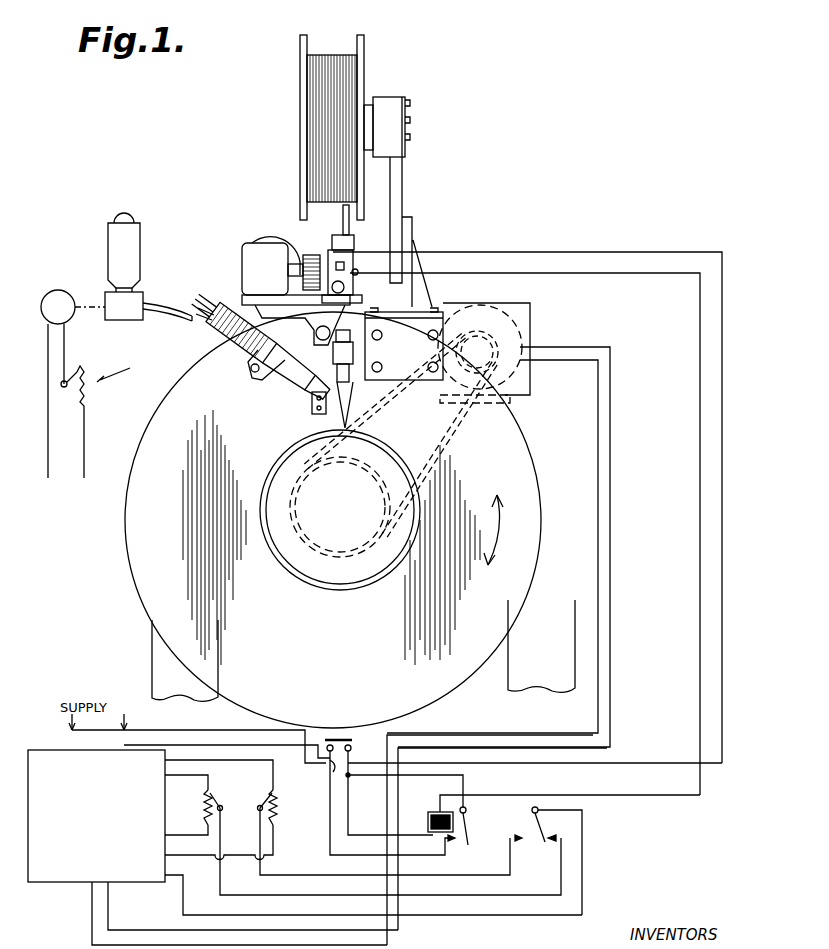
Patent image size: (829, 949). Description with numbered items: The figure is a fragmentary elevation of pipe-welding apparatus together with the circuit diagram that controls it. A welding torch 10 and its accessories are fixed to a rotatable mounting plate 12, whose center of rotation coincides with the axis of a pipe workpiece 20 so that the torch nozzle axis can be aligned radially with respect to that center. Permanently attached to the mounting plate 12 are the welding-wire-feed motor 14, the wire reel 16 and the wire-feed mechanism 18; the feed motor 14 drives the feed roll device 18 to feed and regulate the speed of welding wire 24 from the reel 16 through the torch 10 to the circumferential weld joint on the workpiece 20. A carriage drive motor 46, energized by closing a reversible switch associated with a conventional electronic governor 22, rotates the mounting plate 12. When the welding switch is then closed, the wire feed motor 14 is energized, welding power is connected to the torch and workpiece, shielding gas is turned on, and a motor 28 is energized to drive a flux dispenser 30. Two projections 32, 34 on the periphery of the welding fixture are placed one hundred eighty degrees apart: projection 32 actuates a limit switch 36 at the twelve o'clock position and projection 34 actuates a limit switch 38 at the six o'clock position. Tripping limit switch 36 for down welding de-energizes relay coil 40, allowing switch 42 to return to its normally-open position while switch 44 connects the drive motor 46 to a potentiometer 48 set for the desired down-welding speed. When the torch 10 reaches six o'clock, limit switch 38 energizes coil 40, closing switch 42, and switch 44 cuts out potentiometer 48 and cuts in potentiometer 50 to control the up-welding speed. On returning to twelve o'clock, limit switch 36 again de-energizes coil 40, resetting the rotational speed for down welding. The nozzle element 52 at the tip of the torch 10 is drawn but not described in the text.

The welding torch 10 is at (292, 378).
The rotatable mounting plate 12 is at (140, 570).
The welding-wire-feed motor 14 is at (265, 245).
The wire reel 16 is at (300, 121).
The wire-feed mechanism 18 is at (352, 270).
The pipe workpiece 20 is at (296, 580).
The electronic governor 22 is at (60, 880).
The welding wire 24 is at (343, 212).
The motor 28 is at (57, 290).
The flux dispenser 30 is at (135, 302).
The projection 32 is at (345, 290).
The projection 34 is at (341, 732).
The limit switch 36 is at (420, 298).
The limit switch 38 is at (326, 772).
The relay coil 40 is at (440, 818).
The switch 42 is at (464, 830).
The switch 44 is at (536, 832).
The carriage drive motor 46 is at (505, 335).
The potentiometer 48 is at (212, 793).
The potentiometer 50 is at (258, 806).
The nozzle 52 is at (330, 420).